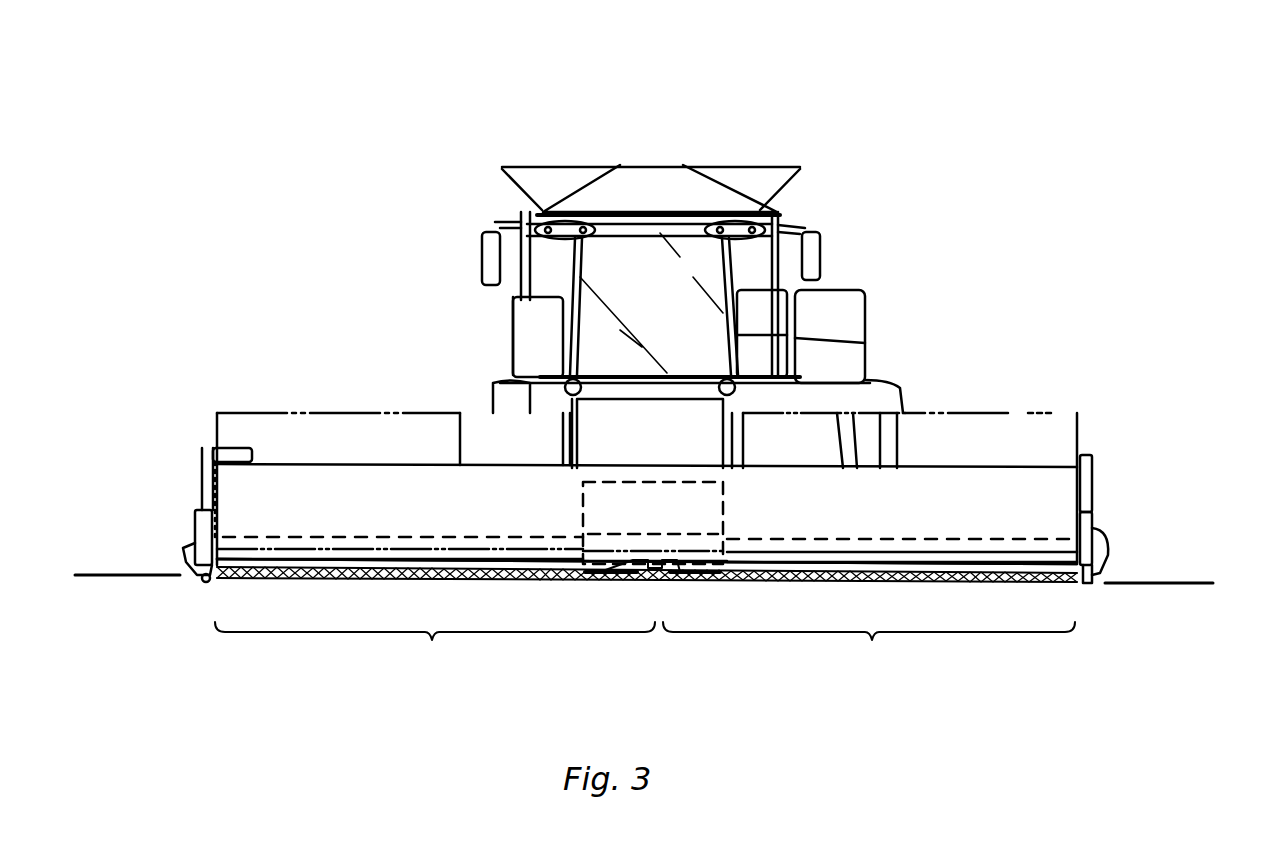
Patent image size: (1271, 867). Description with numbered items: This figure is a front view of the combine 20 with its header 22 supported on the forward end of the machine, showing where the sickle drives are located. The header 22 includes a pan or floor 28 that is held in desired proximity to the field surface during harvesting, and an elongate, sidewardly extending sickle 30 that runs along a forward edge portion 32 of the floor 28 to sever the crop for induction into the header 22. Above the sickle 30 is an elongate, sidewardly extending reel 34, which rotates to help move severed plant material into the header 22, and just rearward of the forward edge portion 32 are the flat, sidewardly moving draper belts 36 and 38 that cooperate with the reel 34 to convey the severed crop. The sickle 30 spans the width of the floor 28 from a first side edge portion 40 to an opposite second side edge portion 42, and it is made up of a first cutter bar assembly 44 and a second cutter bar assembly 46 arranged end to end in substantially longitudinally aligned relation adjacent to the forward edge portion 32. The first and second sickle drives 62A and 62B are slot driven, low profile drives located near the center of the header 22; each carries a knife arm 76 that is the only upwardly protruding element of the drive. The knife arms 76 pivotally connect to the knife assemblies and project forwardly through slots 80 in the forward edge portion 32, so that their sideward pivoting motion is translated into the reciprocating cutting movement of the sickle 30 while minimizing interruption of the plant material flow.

The combine 20 is at (1005, 126).
The header 22 is at (1089, 452).
The floor 28 is at (1030, 557).
The knife arm 76 is at (1030, 557).
The sickle 30 is at (996, 584).
The forward edge portion 32 is at (528, 557).
The reel 34 is at (1017, 413).
The draper belt 36 is at (888, 537).
The draper belt 38 is at (350, 537).
The first side edge portion 40 is at (198, 581).
The second side edge portion 42 is at (1098, 582).
The first cutter bar assembly 44 is at (435, 649).
The second cutter bar assembly 46 is at (869, 649).
The first sickle drive 62A is at (627, 573).
The second sickle drive 62B is at (683, 574).
The slot 80 is at (588, 573).